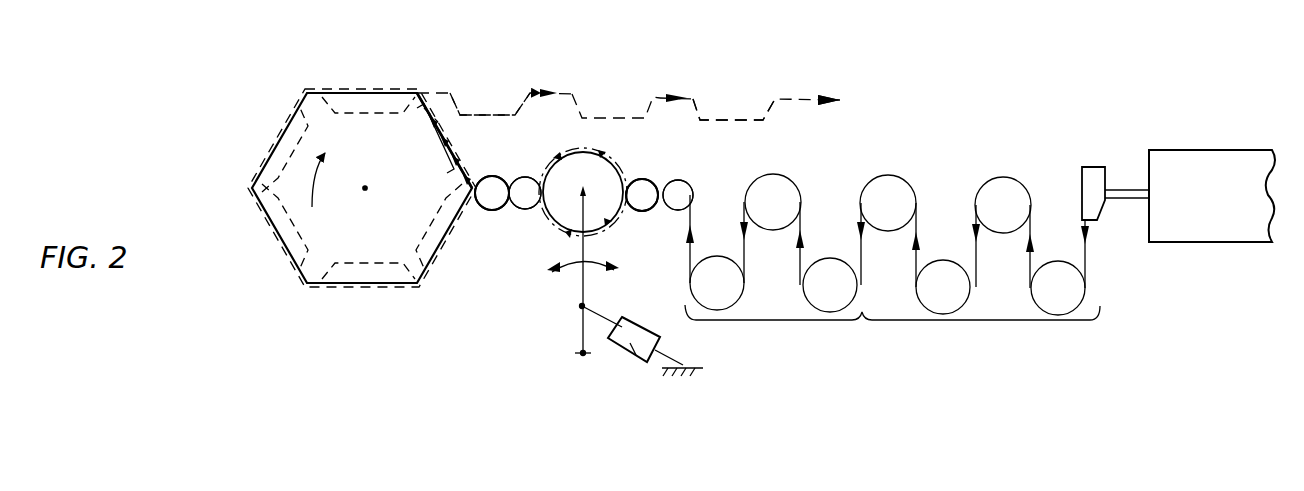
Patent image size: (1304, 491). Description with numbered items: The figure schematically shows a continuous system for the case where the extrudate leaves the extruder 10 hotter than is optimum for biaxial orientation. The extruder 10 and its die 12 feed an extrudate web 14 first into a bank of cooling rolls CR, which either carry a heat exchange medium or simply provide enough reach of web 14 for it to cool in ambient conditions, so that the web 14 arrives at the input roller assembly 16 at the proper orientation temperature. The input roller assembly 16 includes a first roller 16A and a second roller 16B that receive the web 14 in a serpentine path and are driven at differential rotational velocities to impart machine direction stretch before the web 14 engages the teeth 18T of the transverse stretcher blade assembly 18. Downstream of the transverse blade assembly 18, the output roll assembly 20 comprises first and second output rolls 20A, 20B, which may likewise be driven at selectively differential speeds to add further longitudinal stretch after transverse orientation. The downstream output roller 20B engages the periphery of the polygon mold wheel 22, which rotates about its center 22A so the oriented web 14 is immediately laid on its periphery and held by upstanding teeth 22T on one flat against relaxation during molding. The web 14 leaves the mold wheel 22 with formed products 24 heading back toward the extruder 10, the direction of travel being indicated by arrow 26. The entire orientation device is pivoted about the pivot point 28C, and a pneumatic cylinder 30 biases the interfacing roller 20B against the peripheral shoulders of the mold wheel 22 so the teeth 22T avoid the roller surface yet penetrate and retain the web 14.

The extruder 10 is at (1213, 201).
The die 12 is at (1097, 178).
The extrudate web 14 is at (434, 90).
The input roller assembly 16 is at (724, 191).
The first roller 16A is at (680, 190).
The second roller 16B is at (641, 190).
The transverse stretcher blade assembly 18 is at (548, 150).
The teeth 18T is at (612, 134).
The output roll assembly 20 is at (500, 165).
The first output roll 20A is at (522, 200).
The second output roll 20B is at (492, 200).
The polygon mold wheel 22 is at (410, 224).
The center 22A is at (394, 164).
The teeth 22T is at (428, 150).
The formed products 24 is at (487, 112).
The web travel direction 26 is at (838, 100).
The pivot points 28C is at (580, 357).
The pneumatic cylinder 30 is at (660, 336).
The cooling rolls CR is at (892, 265).